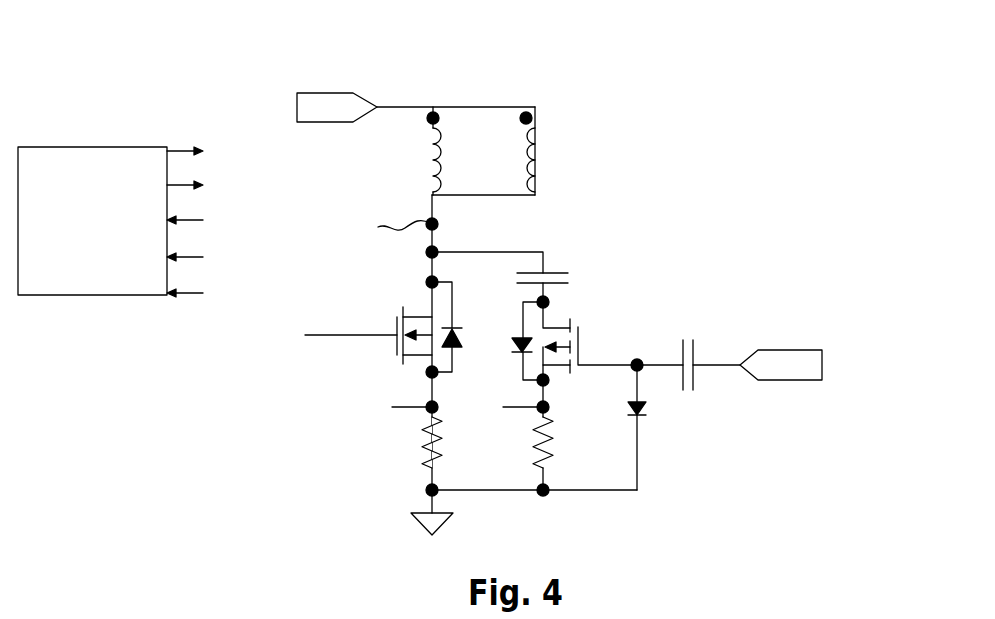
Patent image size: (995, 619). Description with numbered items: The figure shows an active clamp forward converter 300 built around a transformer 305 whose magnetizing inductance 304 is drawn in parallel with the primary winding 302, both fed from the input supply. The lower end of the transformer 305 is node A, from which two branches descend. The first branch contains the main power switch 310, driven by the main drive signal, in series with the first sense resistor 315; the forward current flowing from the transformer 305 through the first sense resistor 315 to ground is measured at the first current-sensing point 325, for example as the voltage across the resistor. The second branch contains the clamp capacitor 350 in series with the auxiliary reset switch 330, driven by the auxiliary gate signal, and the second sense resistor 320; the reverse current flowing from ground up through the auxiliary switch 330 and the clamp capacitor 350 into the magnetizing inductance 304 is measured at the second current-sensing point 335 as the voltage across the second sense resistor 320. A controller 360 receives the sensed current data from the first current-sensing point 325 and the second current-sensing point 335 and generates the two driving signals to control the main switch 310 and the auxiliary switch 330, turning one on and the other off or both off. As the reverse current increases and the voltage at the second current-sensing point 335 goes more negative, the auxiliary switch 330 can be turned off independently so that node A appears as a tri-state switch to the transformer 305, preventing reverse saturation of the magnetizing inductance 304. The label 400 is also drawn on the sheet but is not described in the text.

The active clamp forward converter 300 is at (755, 115).
The primary winding Np 302 is at (533, 130).
The magnetizing inductance Lm 304 is at (393, 175).
The transformer 305 is at (440, 105).
The main power switch Q1 310 is at (355, 338).
The sense resistor RS 315 is at (403, 468).
The sense resistor RS2 320 is at (563, 455).
The current-sensing point CS 325 is at (362, 408).
The auxiliary (reset) switch Q2 330 is at (628, 312).
The current-sensing point CS2 335 is at (553, 410).
The capacitor Cc 350 is at (600, 245).
The controller 360 is at (116, 235).
The figure reference 400 is at (742, 603).